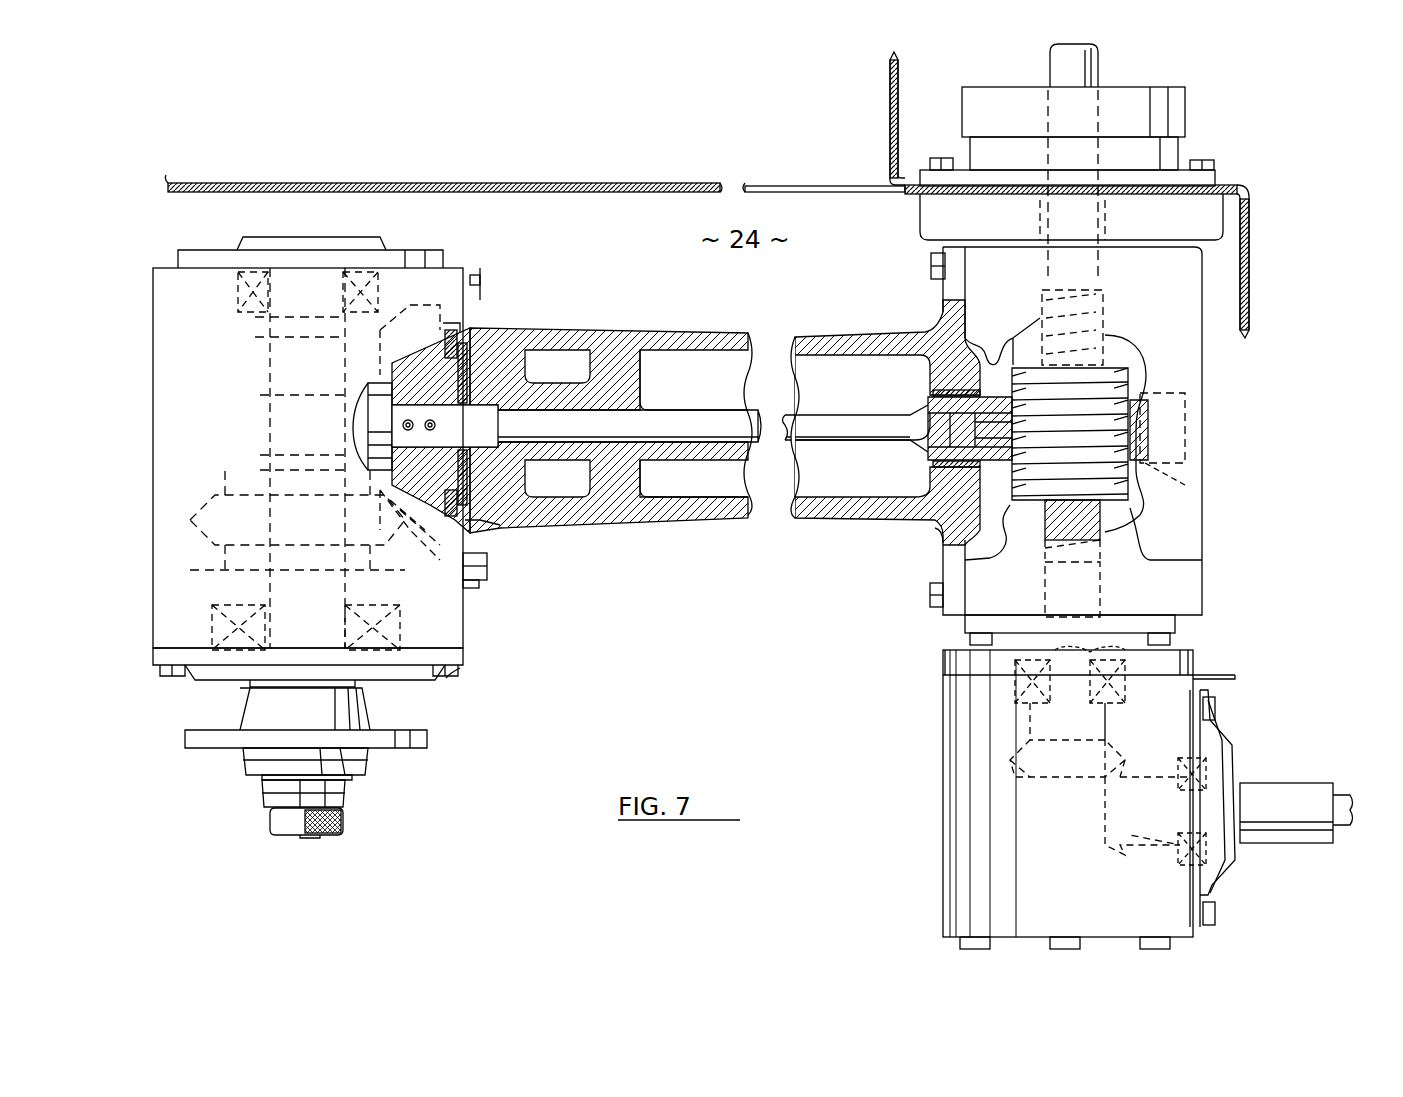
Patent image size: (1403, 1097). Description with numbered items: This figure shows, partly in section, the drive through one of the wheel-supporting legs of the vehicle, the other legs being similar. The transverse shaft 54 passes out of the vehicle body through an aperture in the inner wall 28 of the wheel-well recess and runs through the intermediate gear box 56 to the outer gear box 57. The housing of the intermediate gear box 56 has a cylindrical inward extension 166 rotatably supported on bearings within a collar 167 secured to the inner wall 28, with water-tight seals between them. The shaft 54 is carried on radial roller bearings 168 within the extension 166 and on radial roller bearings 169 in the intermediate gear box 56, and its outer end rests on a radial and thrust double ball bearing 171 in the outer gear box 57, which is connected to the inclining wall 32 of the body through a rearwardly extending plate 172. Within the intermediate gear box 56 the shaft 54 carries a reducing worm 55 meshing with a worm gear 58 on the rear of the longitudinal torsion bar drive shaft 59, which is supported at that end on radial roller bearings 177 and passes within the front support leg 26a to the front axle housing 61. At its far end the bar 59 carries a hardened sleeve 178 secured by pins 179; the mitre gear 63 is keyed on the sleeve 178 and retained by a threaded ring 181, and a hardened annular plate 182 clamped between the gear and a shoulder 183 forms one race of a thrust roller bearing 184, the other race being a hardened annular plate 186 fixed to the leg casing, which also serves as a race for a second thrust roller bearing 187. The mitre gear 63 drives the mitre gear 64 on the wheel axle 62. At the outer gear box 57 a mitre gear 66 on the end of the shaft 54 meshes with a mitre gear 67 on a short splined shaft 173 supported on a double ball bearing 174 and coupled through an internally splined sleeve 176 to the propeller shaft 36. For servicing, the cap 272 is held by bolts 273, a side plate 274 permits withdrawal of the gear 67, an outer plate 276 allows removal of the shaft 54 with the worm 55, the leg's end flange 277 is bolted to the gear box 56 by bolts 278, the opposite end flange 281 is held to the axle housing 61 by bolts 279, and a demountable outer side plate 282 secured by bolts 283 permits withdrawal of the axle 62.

The inner wall 28 is at (555, 182).
The inclining wall 32 is at (1250, 309).
The cylindrical inward extension 166 is at (1165, 122).
The collar 167 is at (1165, 158).
The radial roller bearings 168 is at (1100, 220).
The transverse shaft 54 is at (1098, 270).
The reducing worm 55 is at (1133, 378).
The intermediate gear box 56 is at (1205, 523).
The worm gear 58 is at (1102, 545).
The radial roller bearings 169 is at (1103, 596).
The torsion bar drive shaft 59 is at (848, 421).
The radial roller bearings 177 is at (955, 466).
The end flange 277 is at (935, 553).
The bolts 278 is at (930, 595).
The outer plate 276 is at (965, 625).
The cap 272 is at (960, 660).
The outer gear box 57 is at (943, 714).
The radial and thrust double ball bearing 171 is at (1185, 665).
The rearwardly extending plate 172 is at (1235, 678).
The short shaft 173 is at (1238, 770).
The radial and thrust double ball bearing 174 is at (1232, 740).
The side plate 274 is at (1225, 868).
The internally splined sleeve 176 is at (1298, 798).
The propeller shaft 36 is at (1348, 800).
The mitre gear 66 is at (1055, 770).
The mitre gear 67 is at (1110, 830).
The bolts 273 is at (958, 944).
The hardened sleeve 178 is at (565, 400).
The pins 179 is at (430, 420).
The threaded ring 181 is at (375, 400).
The hardened annular plate 182 is at (466, 342).
The thrust roller bearing 184 is at (475, 290).
The hardened annular plate 186 is at (445, 330).
The thrust roller bearing 187 is at (447, 360).
The shoulder 183 is at (475, 515).
The bolts 279 is at (490, 563).
The end flange 281 is at (473, 586).
The front axle housing 61 is at (465, 622).
The demountable outer side plate 282 is at (465, 655).
The bolts 283 is at (450, 676).
The wheel axle 62 is at (300, 430).
The mitre gear 63 is at (445, 500).
The mitre gear 64 is at (298, 533).
The front support leg 26a is at (728, 520).